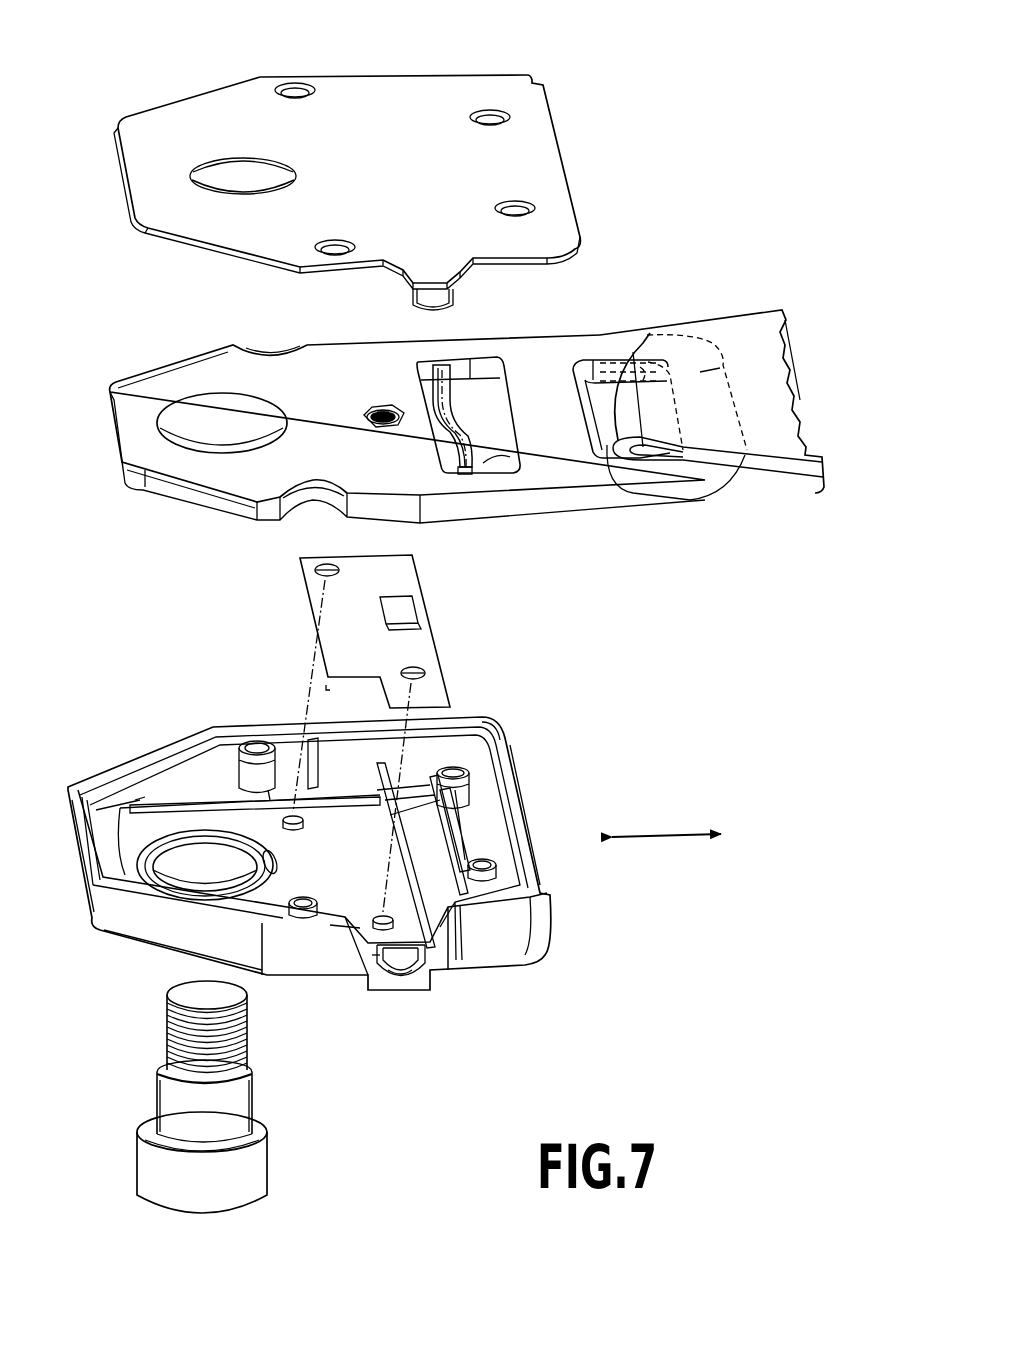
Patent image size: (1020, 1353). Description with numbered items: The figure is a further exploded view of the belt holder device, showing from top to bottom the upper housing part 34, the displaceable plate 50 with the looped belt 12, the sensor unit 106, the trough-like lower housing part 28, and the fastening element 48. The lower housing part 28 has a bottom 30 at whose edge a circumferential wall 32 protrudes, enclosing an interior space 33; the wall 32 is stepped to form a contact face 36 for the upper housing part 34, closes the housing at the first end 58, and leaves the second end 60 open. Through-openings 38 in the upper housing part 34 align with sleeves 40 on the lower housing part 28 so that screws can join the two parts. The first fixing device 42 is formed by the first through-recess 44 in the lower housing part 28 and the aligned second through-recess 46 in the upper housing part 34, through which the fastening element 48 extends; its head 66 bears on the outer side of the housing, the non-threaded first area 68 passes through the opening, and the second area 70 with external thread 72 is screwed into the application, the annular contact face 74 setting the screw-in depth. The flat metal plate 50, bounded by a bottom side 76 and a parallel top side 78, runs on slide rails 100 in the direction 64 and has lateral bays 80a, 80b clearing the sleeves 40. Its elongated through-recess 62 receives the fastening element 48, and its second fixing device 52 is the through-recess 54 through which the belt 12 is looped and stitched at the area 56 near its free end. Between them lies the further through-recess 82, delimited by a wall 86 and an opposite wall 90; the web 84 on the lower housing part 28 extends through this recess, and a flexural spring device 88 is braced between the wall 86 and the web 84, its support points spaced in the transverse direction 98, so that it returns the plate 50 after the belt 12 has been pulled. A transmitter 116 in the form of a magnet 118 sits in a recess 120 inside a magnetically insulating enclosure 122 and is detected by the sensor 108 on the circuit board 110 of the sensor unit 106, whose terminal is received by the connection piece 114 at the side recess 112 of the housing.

The belt 12 is at (763, 427).
The lower housing part 28 is at (490, 957).
The bottom 30 is at (130, 835).
The circumferential wall 32 is at (160, 935).
The interior space 33 is at (345, 893).
The upper housing part 34 is at (553, 217).
The contact face 36 is at (490, 725).
The through-openings 38 is at (337, 247).
The sleeves 40 is at (250, 745).
The first fixing device 42 is at (207, 85).
The first through-recess 44 is at (175, 875).
The second through-recess 46 is at (230, 180).
The fastening element 48 is at (280, 1155).
The plate 50 is at (565, 460).
The second fixing device 52 is at (650, 343).
The through-recess 54 is at (618, 440).
The area near free end 56 is at (808, 478).
The first end 58 is at (78, 850).
The second end 60 is at (545, 880).
The through-recess 62 is at (205, 440).
The direction 64 is at (667, 838).
The head 66 is at (250, 1180).
The first area 68 is at (165, 1100).
The second area 70 is at (235, 1015).
The external thread 72 is at (252, 1070).
The contact face 74 is at (245, 1090).
The bottom side 76 is at (240, 485).
The top side 78 is at (205, 378).
The lateral bay 80a is at (262, 350).
The lateral bay 80b is at (308, 500).
The further through-recess 82 is at (517, 463).
The web 84 is at (455, 880).
The wall 86 is at (430, 375).
The flexural spring device 88 is at (465, 472).
The wall 90 is at (498, 413).
The direction 98 is at (445, 366).
The slide rails 100 is at (183, 800).
The sensor unit 106 is at (440, 665).
The sensor 108 is at (410, 608).
The circuit board 110 is at (337, 650).
The recess 112 is at (405, 975).
The connection piece 114 is at (380, 955).
The transmitter 116 is at (380, 408).
The magnet 118 is at (390, 430).
The recess 120 is at (370, 422).
The magnetically insulating enclosure 122 is at (372, 413).